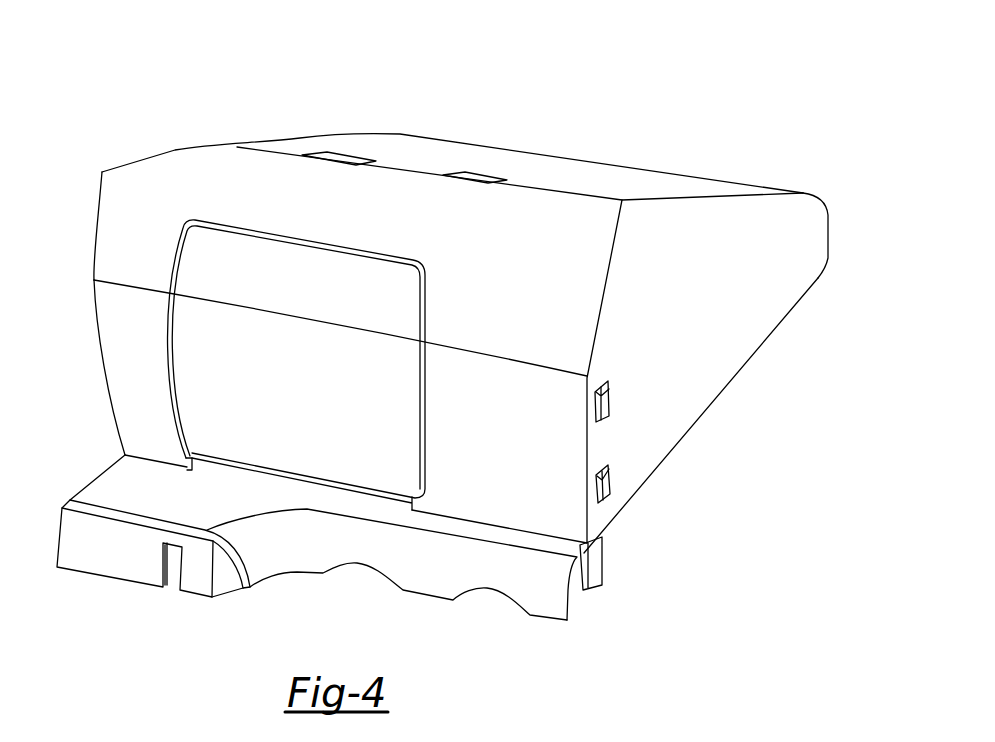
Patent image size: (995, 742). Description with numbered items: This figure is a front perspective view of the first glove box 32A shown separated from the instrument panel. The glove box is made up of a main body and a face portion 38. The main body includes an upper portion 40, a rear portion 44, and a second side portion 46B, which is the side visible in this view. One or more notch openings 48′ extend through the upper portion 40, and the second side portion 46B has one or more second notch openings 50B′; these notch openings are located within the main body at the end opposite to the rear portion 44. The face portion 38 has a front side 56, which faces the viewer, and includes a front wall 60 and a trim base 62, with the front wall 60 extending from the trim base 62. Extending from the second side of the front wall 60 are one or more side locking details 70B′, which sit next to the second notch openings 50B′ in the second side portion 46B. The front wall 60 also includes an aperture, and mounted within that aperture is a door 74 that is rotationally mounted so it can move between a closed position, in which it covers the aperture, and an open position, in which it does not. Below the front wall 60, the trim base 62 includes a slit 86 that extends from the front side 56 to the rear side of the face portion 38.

The first glove box 32A is at (168, 100).
The face portion 38 is at (118, 327).
The upper portion 40 is at (594, 170).
The rear portion 44 is at (828, 230).
The second side portion 46B is at (735, 353).
The notch opening 48′ is at (347, 152).
The second notch opening 50B′ is at (612, 392).
The front side 56 is at (112, 226).
The front wall 60 is at (585, 244).
The trim base 62 is at (428, 585).
The side locking detail 70B′ is at (610, 400).
The door 74 is at (373, 278).
The slit 86 is at (175, 577).